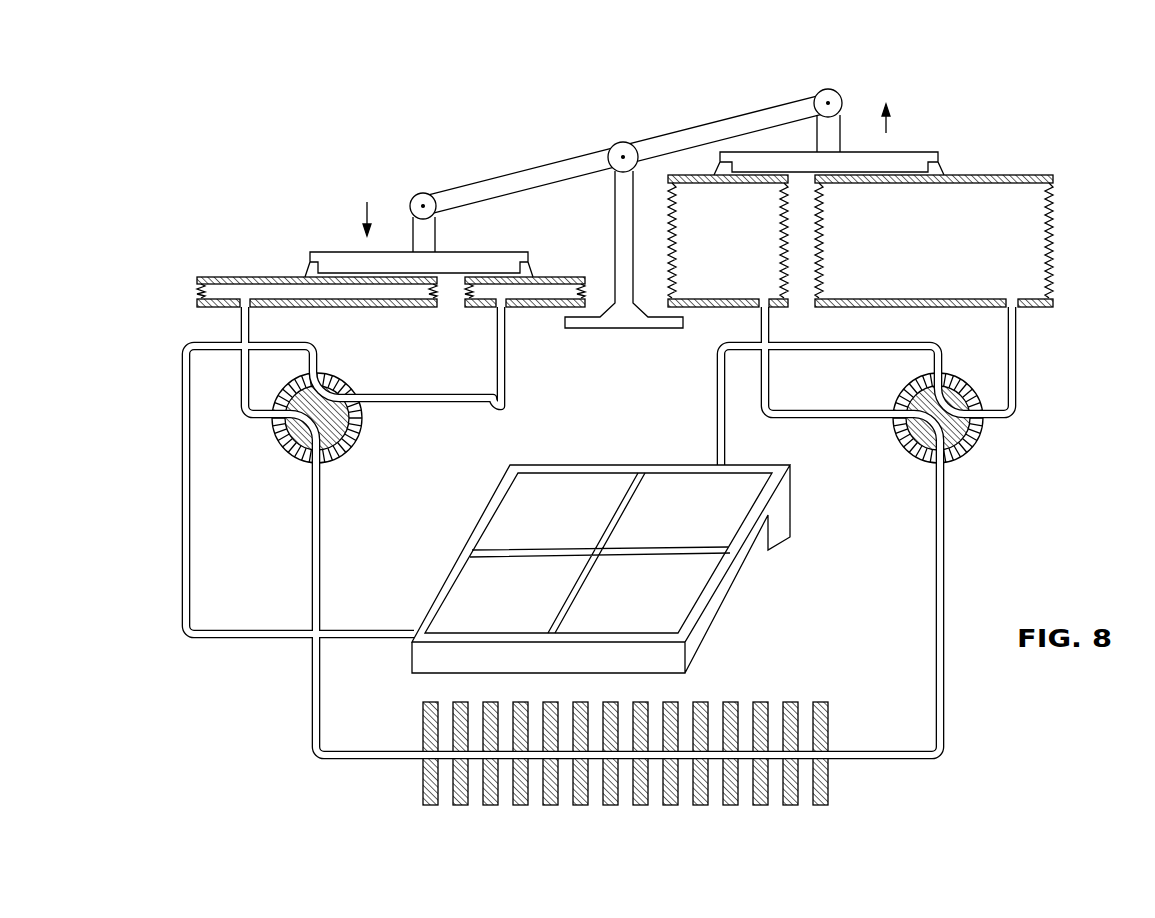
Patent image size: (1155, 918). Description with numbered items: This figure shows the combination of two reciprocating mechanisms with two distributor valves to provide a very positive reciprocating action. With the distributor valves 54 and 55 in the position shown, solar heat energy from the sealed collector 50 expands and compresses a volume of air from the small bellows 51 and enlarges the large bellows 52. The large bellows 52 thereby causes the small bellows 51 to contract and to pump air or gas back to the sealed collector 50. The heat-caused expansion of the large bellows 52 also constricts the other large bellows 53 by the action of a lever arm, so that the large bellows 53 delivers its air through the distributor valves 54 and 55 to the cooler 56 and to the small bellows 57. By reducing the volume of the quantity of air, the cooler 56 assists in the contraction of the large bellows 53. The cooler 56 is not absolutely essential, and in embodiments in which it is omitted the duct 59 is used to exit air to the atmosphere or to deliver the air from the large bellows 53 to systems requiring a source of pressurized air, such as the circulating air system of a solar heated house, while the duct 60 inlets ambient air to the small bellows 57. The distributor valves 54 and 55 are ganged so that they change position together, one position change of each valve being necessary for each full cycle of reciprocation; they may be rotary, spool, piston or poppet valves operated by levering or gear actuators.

The sealed collector 50 is at (716, 617).
The small bellows 51 is at (582, 277).
The large bellows 52 is at (990, 177).
The large bellows 53 is at (250, 277).
The distributor valve 54 is at (326, 376).
The distributor valve 55 is at (946, 376).
The cooler 56 is at (828, 720).
The small bellows 57 is at (679, 176).
The duct 59 is at (312, 691).
The duct 60 is at (945, 689).